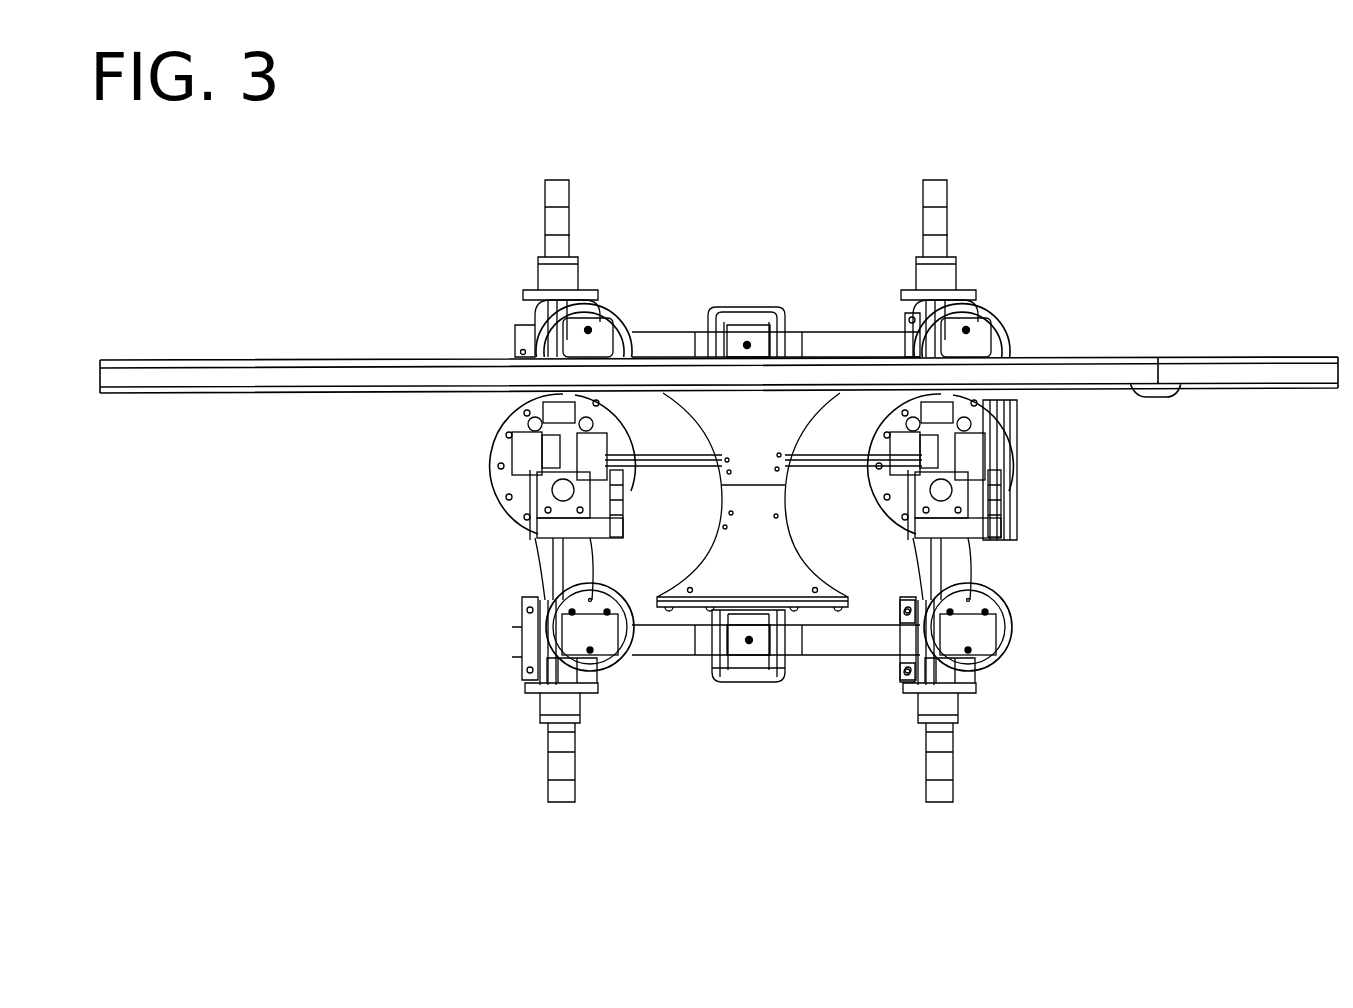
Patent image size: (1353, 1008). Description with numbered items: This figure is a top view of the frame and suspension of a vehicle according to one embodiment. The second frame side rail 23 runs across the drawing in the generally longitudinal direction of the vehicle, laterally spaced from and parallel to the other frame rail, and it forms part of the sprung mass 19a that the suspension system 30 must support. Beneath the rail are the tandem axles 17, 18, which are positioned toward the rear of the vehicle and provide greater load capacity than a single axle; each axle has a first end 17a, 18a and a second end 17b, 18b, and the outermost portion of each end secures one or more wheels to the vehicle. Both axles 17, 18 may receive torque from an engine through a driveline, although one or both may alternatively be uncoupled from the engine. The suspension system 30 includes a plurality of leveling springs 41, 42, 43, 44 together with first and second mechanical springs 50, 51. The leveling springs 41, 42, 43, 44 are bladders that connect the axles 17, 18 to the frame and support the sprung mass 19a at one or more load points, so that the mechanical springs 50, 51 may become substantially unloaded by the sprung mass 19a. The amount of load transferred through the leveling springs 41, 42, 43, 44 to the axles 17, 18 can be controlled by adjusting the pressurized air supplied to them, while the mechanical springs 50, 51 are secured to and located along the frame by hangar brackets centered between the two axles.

The first tandem axle 17 is at (537, 571).
The first end of first axle 17a is at (568, 778).
The second end of first axle 17b is at (557, 200).
The second tandem axle 18 is at (958, 560).
The first end of second axle 18a is at (946, 778).
The second end of second axle 18b is at (933, 200).
The sprung mass 19a is at (652, 402).
The second frame side rail 23 is at (395, 358).
The suspension system 30 is at (898, 325).
The leveling spring 41 is at (557, 642).
The leveling spring 42 is at (997, 648).
The leveling spring 43 is at (560, 338).
The leveling spring 44 is at (985, 325).
The first mechanical spring 50 is at (658, 652).
The second mechanical spring 51 is at (660, 332).